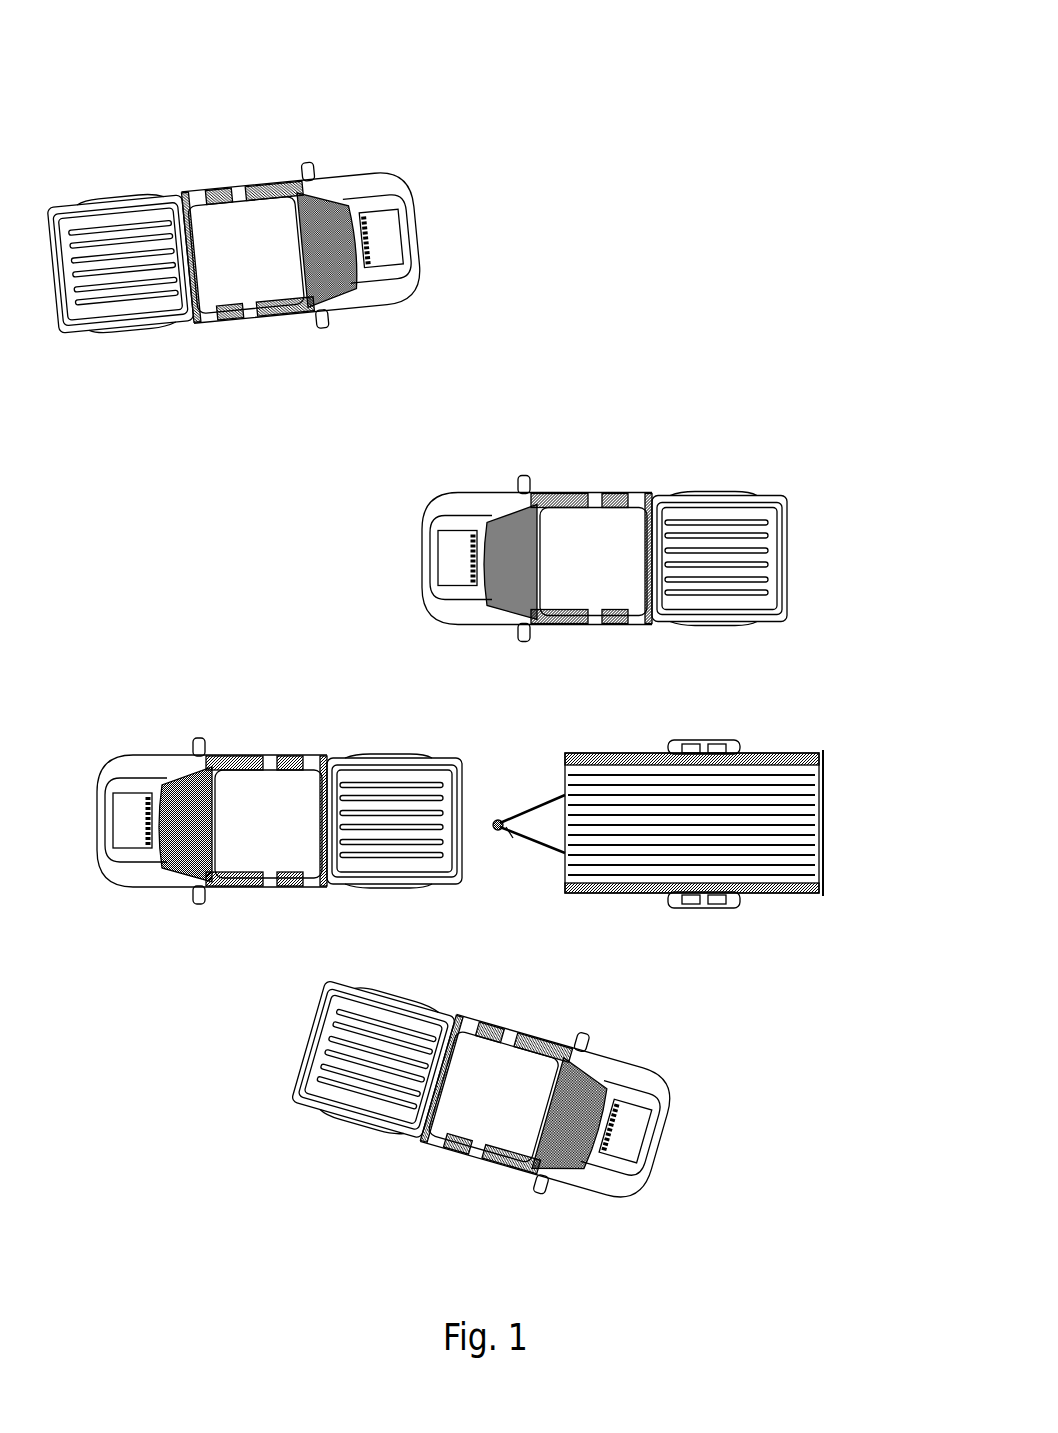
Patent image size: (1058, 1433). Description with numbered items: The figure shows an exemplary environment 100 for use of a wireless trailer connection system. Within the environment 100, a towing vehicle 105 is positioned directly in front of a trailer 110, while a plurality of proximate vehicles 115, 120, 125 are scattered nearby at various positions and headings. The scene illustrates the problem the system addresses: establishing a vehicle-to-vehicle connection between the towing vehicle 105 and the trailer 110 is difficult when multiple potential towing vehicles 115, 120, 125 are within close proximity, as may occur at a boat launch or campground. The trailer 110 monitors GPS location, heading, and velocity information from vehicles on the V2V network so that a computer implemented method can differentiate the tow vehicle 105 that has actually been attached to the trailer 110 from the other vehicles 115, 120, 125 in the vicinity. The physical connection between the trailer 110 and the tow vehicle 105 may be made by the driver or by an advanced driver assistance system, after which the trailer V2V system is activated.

The environment 100 is at (530, 32).
The towing vehicle 105 is at (242, 742).
The trailer 110 is at (822, 783).
The proximate vehicle 115 is at (797, 483).
The proximate vehicle 120 is at (693, 1123).
The proximate vehicle 125 is at (415, 215).